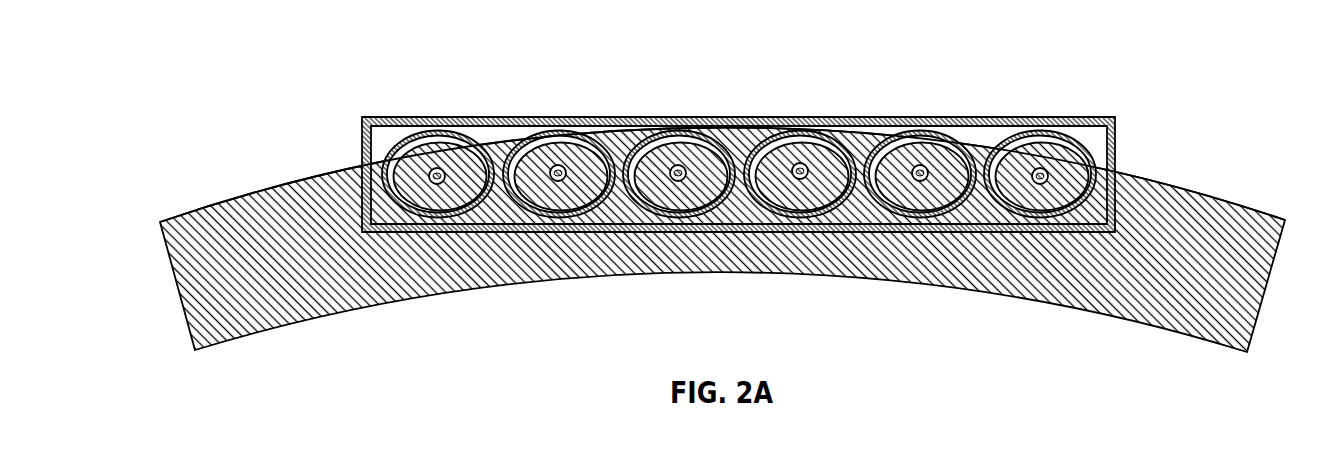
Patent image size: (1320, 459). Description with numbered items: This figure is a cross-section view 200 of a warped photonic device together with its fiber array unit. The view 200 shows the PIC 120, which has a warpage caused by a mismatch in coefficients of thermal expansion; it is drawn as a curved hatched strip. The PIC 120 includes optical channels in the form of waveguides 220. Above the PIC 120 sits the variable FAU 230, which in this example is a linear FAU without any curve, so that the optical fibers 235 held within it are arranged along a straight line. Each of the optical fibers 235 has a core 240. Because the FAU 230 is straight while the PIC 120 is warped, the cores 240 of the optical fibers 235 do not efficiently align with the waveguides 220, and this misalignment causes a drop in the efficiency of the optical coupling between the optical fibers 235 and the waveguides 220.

The view 200 is at (787, 183).
The PIC 120 is at (286, 332).
The waveguides 220 is at (430, 178).
The variable FAU 230 is at (627, 216).
The optical fibers 235 is at (437, 131).
The cores 240 is at (395, 162).